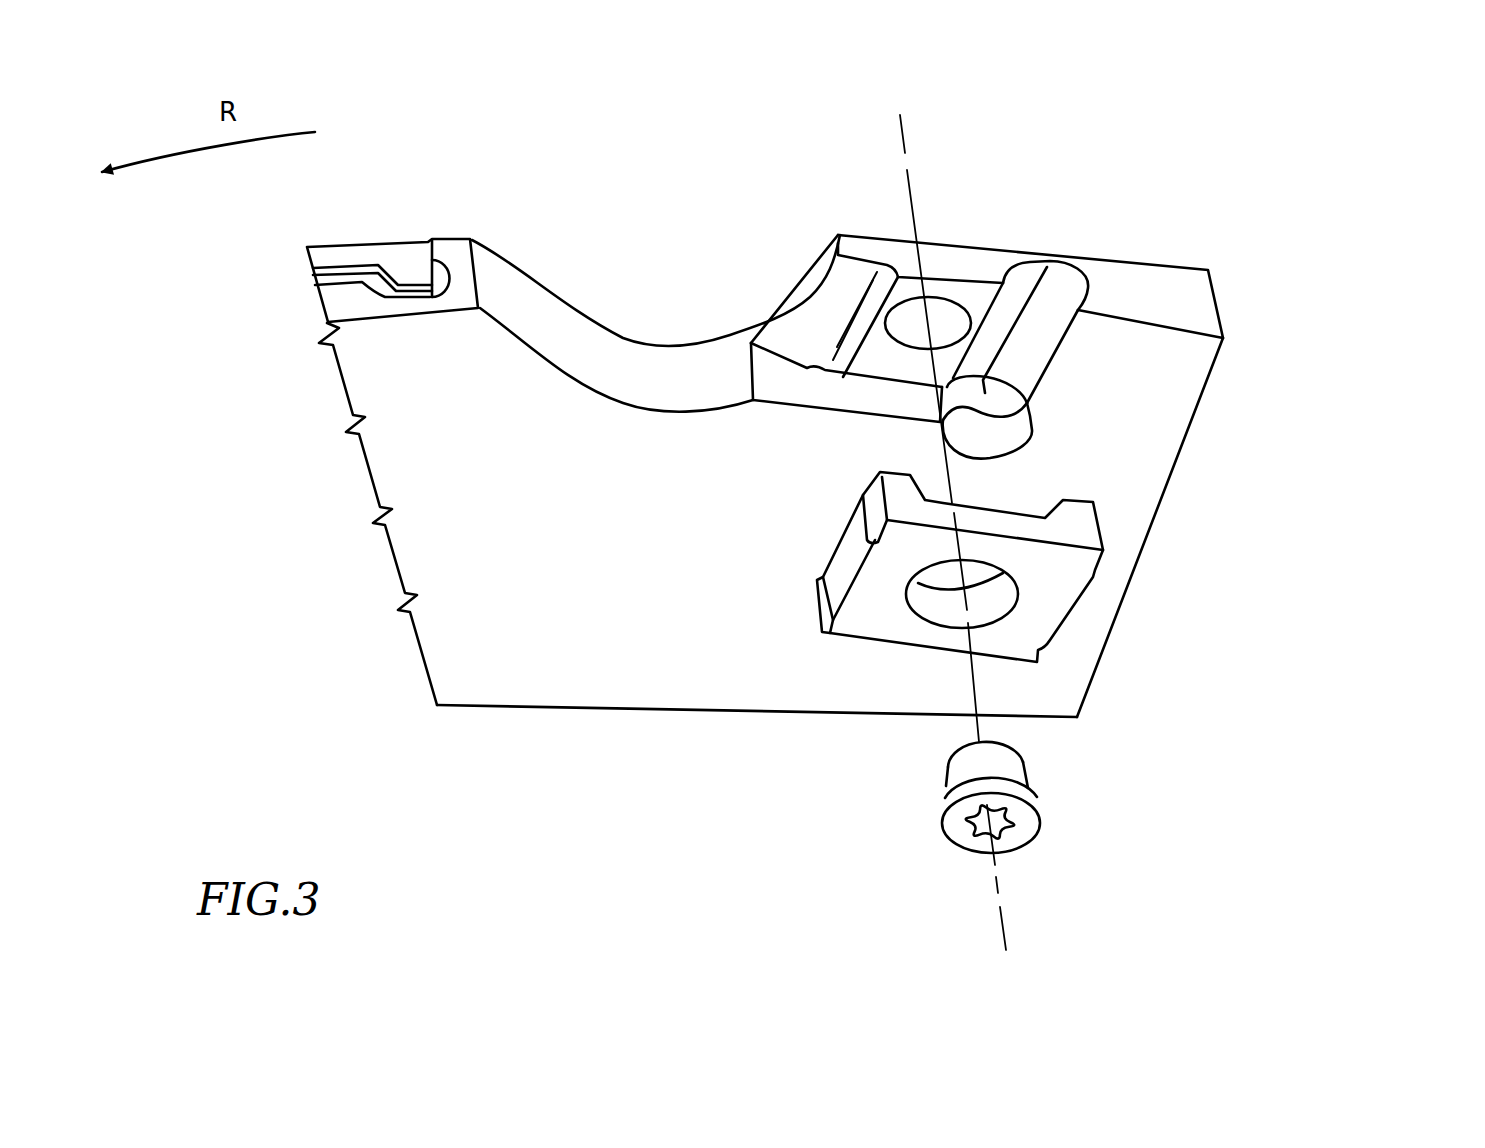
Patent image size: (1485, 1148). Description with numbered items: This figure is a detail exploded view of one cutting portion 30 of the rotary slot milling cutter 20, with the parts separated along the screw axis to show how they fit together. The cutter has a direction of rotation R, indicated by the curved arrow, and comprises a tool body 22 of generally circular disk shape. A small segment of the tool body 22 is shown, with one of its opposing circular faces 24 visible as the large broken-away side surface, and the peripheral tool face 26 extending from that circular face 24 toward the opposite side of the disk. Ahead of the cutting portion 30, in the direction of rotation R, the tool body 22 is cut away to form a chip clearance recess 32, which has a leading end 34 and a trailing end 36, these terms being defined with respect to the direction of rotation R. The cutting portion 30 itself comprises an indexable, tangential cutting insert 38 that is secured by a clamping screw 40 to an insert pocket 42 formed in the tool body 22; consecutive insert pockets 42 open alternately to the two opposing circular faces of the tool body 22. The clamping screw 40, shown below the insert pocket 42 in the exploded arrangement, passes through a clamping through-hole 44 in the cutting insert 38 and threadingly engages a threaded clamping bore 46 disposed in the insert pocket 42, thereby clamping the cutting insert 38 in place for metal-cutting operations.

The rotary slot milling cutter 20 is at (1347, 247).
The tool body 22 is at (595, 602).
The circular face 24 is at (483, 552).
The peripheral tool face 26 is at (1163, 290).
The cutting portion 30 is at (428, 398).
The chip clearance recess 32 is at (702, 263).
The leading end 34 is at (530, 307).
The trailing end 36 is at (773, 327).
The cutting insert 38 is at (1048, 592).
The clamping screw 40 is at (955, 830).
The insert pocket 42 is at (843, 290).
The clamping through-hole 44 is at (990, 600).
The threaded clamping bore 46 is at (950, 313).